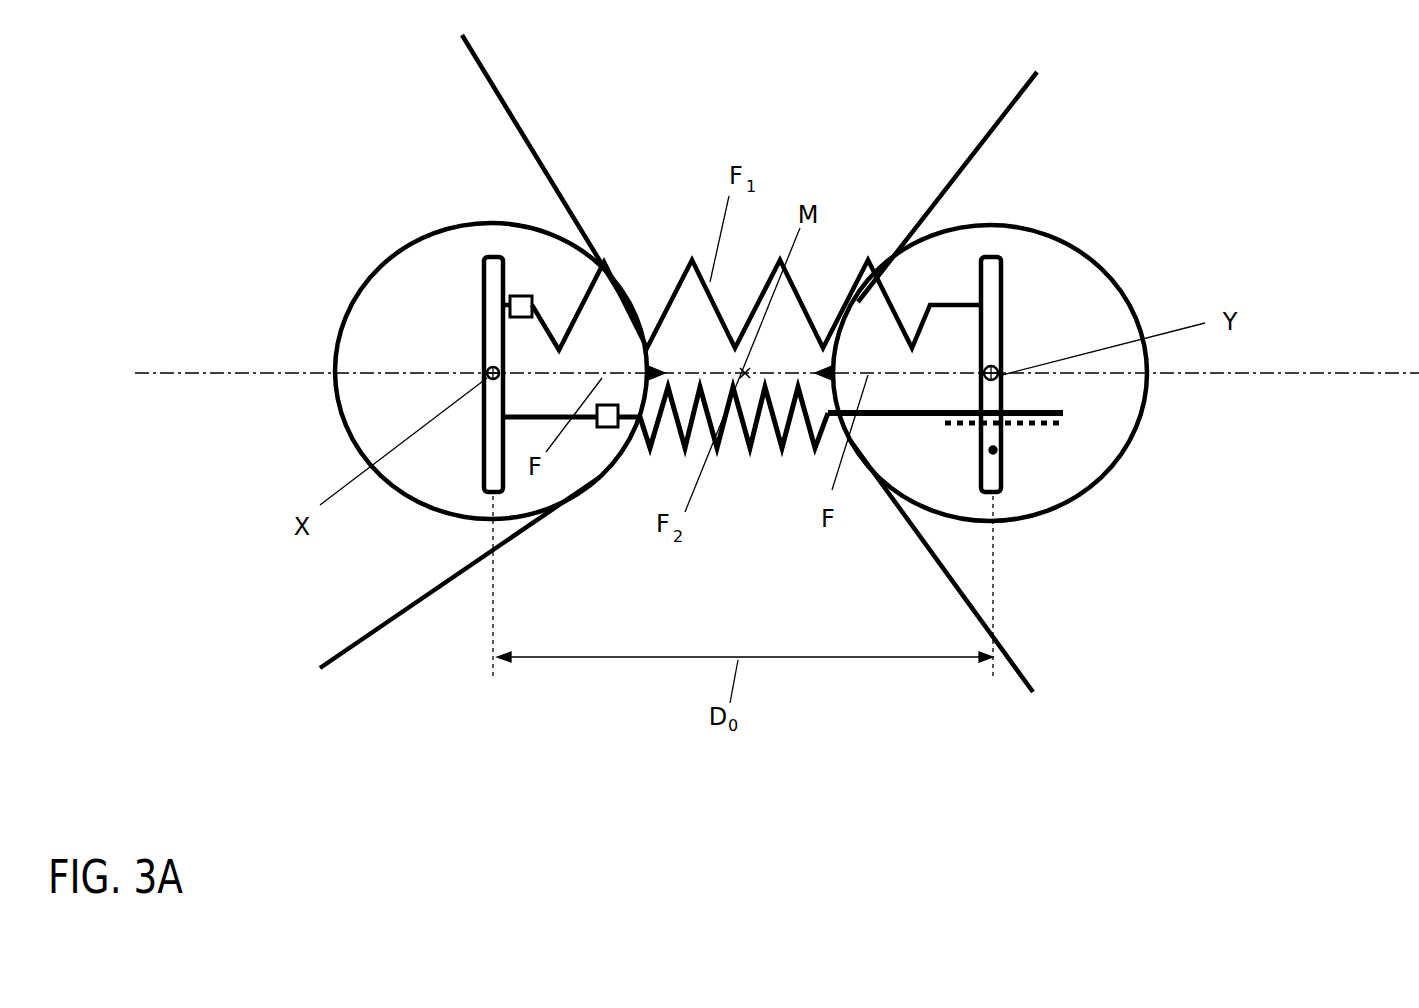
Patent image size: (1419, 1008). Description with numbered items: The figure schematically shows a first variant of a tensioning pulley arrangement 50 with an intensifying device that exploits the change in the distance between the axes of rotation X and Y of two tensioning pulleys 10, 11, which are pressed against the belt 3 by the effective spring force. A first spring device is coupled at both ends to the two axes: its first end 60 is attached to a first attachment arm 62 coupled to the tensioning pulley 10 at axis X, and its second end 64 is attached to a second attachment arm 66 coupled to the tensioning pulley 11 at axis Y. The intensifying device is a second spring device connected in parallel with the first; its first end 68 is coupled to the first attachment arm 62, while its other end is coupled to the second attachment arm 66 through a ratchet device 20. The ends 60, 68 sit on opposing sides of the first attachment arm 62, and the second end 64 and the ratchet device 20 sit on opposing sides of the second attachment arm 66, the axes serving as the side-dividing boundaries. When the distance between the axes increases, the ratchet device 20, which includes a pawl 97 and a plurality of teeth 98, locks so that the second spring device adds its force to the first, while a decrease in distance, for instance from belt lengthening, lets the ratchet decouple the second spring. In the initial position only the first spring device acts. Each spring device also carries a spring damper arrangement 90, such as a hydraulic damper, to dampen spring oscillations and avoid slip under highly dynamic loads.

The belt 3 is at (547, 173).
The tensioning pulley 10 is at (378, 303).
The tensioning pulley 11 is at (1062, 263).
The ratchet device 20 is at (1042, 444).
The tensioning pulley arrangement 50 is at (234, 292).
The first end 60 is at (484, 306).
The first attachment arm 62 is at (484, 284).
The second end 64 is at (986, 312).
The second attachment arm 66 is at (1002, 290).
The first end 68 is at (484, 418).
The spring damper arrangement 90 is at (519, 296).
The pawl 97 is at (997, 453).
The teeth 98 is at (963, 423).